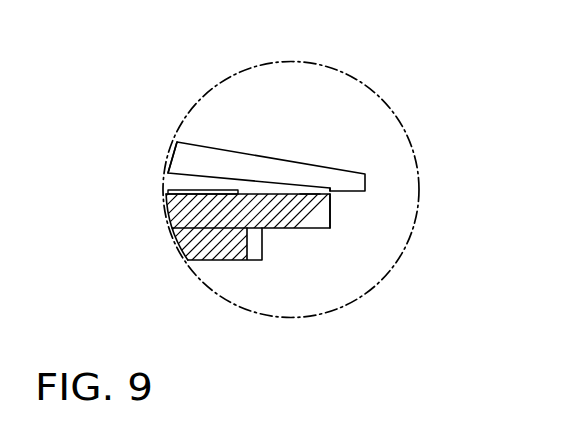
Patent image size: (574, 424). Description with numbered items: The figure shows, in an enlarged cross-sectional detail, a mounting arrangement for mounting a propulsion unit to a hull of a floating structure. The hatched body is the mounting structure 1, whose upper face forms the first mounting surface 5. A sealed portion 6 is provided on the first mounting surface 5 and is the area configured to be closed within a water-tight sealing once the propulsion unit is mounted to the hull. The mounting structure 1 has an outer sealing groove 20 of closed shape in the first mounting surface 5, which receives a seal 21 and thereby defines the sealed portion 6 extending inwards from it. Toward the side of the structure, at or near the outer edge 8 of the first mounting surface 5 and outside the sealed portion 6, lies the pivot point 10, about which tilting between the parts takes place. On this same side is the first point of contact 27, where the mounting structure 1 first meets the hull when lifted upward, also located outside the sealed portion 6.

The mounting structure 1 is at (275, 228).
The first mounting surface 5 is at (165, 185).
The sealed portion 6 is at (192, 196).
The edge 8 is at (340, 213).
The pivot point 10 is at (310, 193).
The outer sealing groove 20 is at (214, 195).
The seal 21 is at (211, 190).
The first point of contact 27 is at (322, 193).